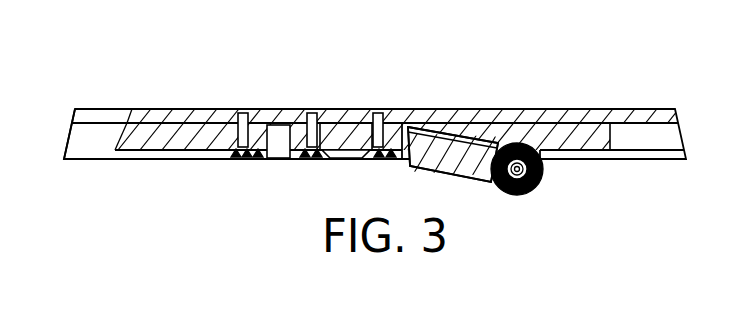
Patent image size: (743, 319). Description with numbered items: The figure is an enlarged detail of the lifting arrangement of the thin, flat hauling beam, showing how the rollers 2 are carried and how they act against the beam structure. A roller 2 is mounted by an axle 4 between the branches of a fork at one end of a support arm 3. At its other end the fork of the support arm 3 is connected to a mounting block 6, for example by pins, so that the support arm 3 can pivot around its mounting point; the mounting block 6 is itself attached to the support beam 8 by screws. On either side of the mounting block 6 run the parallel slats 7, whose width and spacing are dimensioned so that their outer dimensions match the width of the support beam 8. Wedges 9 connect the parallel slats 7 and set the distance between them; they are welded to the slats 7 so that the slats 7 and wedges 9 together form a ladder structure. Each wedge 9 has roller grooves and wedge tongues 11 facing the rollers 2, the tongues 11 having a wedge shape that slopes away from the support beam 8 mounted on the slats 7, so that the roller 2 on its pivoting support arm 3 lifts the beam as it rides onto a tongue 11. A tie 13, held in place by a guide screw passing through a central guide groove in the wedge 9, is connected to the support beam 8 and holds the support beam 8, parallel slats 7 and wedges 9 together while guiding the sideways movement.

The roller 2 is at (545, 172).
The support arm 3 is at (460, 172).
The axle 4 is at (532, 186).
The mounting block 6 is at (352, 134).
The parallel slat 7 is at (95, 142).
The support beam 8 is at (595, 110).
The wedge 9 is at (592, 152).
The wedge tongue 11 is at (482, 134).
The tie 13 is at (170, 146).